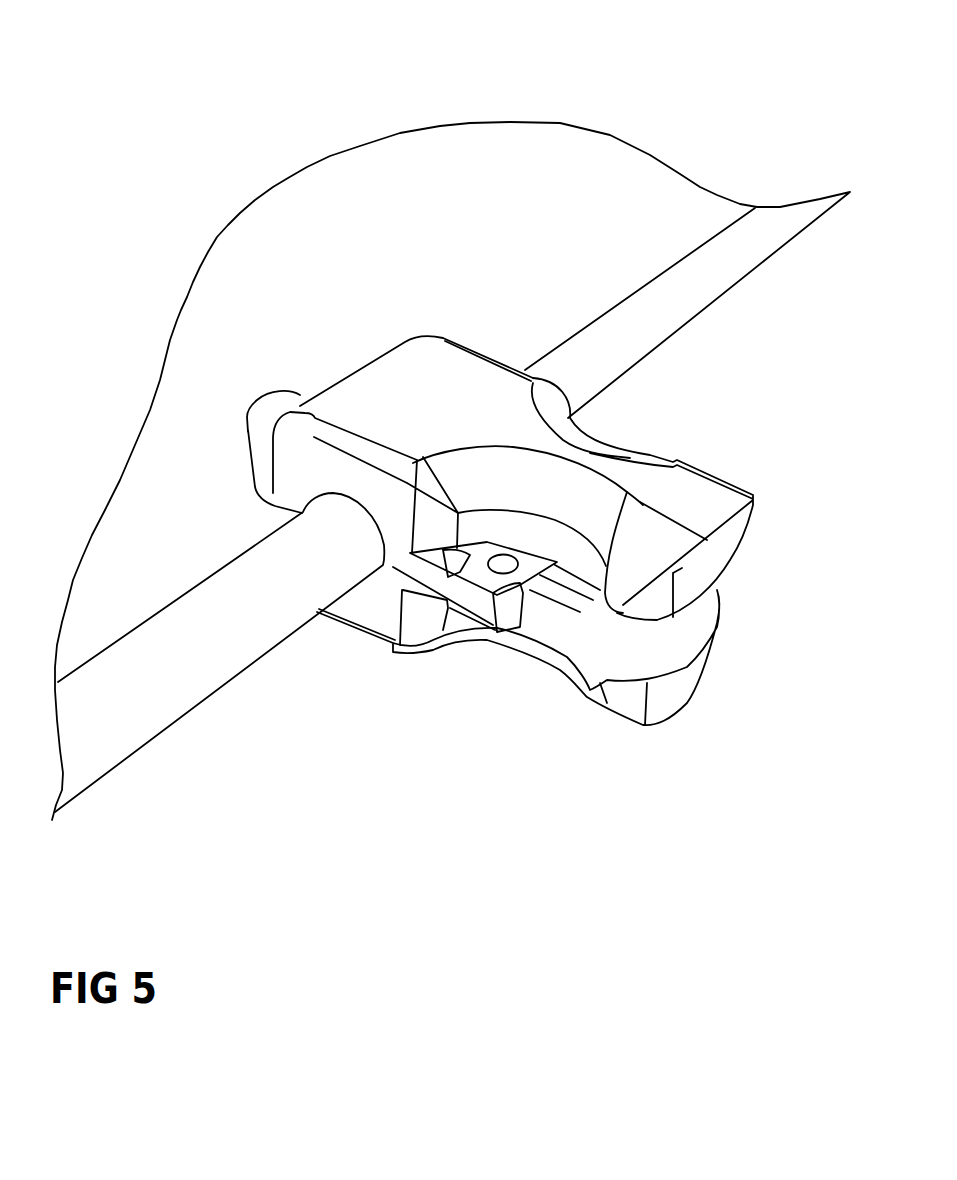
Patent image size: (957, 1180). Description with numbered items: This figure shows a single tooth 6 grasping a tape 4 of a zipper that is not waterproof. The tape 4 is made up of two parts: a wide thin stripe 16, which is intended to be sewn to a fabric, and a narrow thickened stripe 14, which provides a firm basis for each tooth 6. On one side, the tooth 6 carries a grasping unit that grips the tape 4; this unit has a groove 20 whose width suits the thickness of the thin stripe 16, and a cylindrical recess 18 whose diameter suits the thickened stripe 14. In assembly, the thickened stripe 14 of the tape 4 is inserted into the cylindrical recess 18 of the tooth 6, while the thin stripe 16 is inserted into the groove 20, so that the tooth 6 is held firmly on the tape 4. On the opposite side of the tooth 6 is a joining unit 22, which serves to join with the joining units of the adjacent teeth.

The tape 4 is at (288, 92).
The tooth 6 is at (473, 767).
The thickened stripe 14 is at (203, 665).
The thin stripe 16 is at (530, 172).
The cylindrical recess 18 is at (372, 578).
The groove 20 is at (278, 507).
The joining unit 22 is at (703, 498).